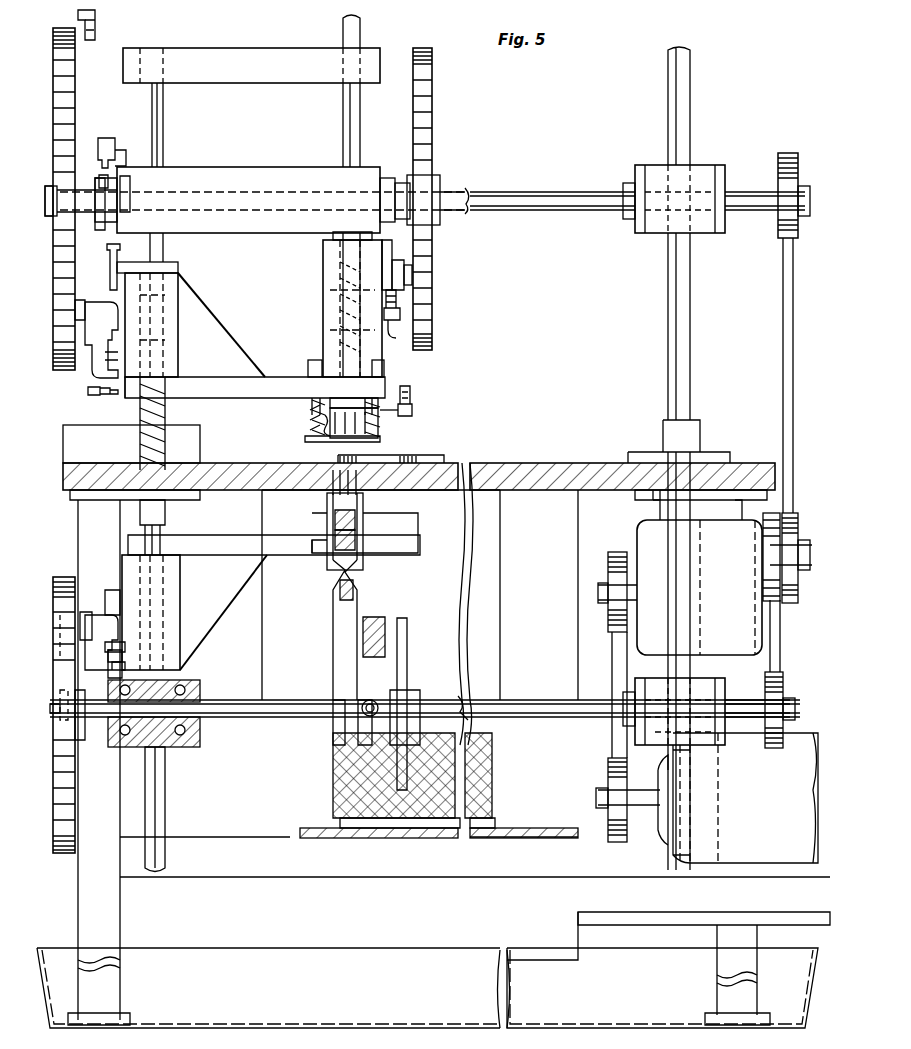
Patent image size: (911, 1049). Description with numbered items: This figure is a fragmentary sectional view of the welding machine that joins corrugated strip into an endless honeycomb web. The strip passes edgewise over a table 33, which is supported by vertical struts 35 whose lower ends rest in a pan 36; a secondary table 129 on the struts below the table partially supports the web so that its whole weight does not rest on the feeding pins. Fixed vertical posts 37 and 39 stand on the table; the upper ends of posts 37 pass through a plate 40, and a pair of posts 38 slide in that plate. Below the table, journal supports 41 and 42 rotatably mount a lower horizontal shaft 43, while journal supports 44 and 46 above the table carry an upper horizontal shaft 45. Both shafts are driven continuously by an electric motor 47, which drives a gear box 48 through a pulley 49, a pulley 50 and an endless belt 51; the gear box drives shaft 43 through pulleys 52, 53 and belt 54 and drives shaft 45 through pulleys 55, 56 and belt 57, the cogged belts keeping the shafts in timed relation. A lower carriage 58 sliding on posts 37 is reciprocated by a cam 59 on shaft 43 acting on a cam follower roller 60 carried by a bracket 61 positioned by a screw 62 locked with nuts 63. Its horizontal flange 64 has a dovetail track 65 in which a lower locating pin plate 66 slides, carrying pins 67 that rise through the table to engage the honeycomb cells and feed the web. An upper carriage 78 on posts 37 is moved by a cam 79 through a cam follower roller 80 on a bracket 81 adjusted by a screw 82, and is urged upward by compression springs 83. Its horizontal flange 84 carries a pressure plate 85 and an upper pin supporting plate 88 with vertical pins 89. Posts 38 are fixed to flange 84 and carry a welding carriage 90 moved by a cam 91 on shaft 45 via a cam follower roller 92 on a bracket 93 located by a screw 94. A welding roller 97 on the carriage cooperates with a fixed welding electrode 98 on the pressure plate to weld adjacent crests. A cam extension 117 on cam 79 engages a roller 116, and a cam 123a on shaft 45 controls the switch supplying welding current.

The table 33 is at (535, 462).
The vertical struts 35 is at (126, 920).
The pan 36 is at (433, 923).
The vertical posts 37 is at (160, 127).
The posts 38 is at (360, 27).
The vertical posts 39 is at (690, 82).
The plate 40 is at (226, 56).
The journal support 41 is at (190, 688).
The journal support 42 is at (715, 684).
The lower horizontal shaft 43 is at (535, 704).
The journal support 44 is at (206, 172).
The horizontal shaft 45 is at (505, 192).
The journal support 46 is at (706, 172).
The electric motor 47 is at (738, 798).
The gear box 48 is at (699, 572).
The pulley 49 is at (605, 838).
The pulley 50 is at (608, 556).
The endless belt 51 is at (608, 745).
The pulley 52 is at (770, 512).
The pulley 53 is at (786, 678).
The endless belt 54 is at (782, 640).
The pulley 55 is at (798, 540).
The pulley 56 is at (796, 174).
The endless belt 57 is at (790, 320).
The lower carriage 58 is at (172, 604).
The cam 59 is at (63, 577).
The cam follower roller 60 is at (84, 612).
The bracket 61 is at (105, 630).
The screw 62 is at (108, 652).
The nuts 63 is at (108, 674).
The horizontal flange 64 is at (216, 546).
The dovetail track 65 is at (372, 530).
The lower locating pin plate 66 is at (380, 532).
The pins 67 is at (332, 488).
The upper carriage 78 is at (170, 328).
The cam 79 is at (72, 98).
The cam follower roller 80 is at (80, 300).
The bracket 81 is at (101, 339).
The screw 82 is at (107, 254).
The compression springs 83 is at (165, 420).
The horizontal flange 84 is at (268, 380).
The pressure plate 85 is at (385, 434).
The upper locater pin supporting plate 88 is at (355, 406).
The vertical pins 89 is at (365, 440).
The welding carriage 90 is at (323, 260).
The cam 91 is at (432, 112).
The cam follower roller 92 is at (420, 275).
The bracket 93 is at (400, 268).
The screw 94 is at (396, 322).
The welding roller 97 is at (315, 440).
The welding electrode 98 is at (328, 442).
The roller 116 is at (88, 392).
The cam extension 117 is at (92, 22).
The cam 123a is at (95, 158).
The secondary table 129 is at (528, 834).